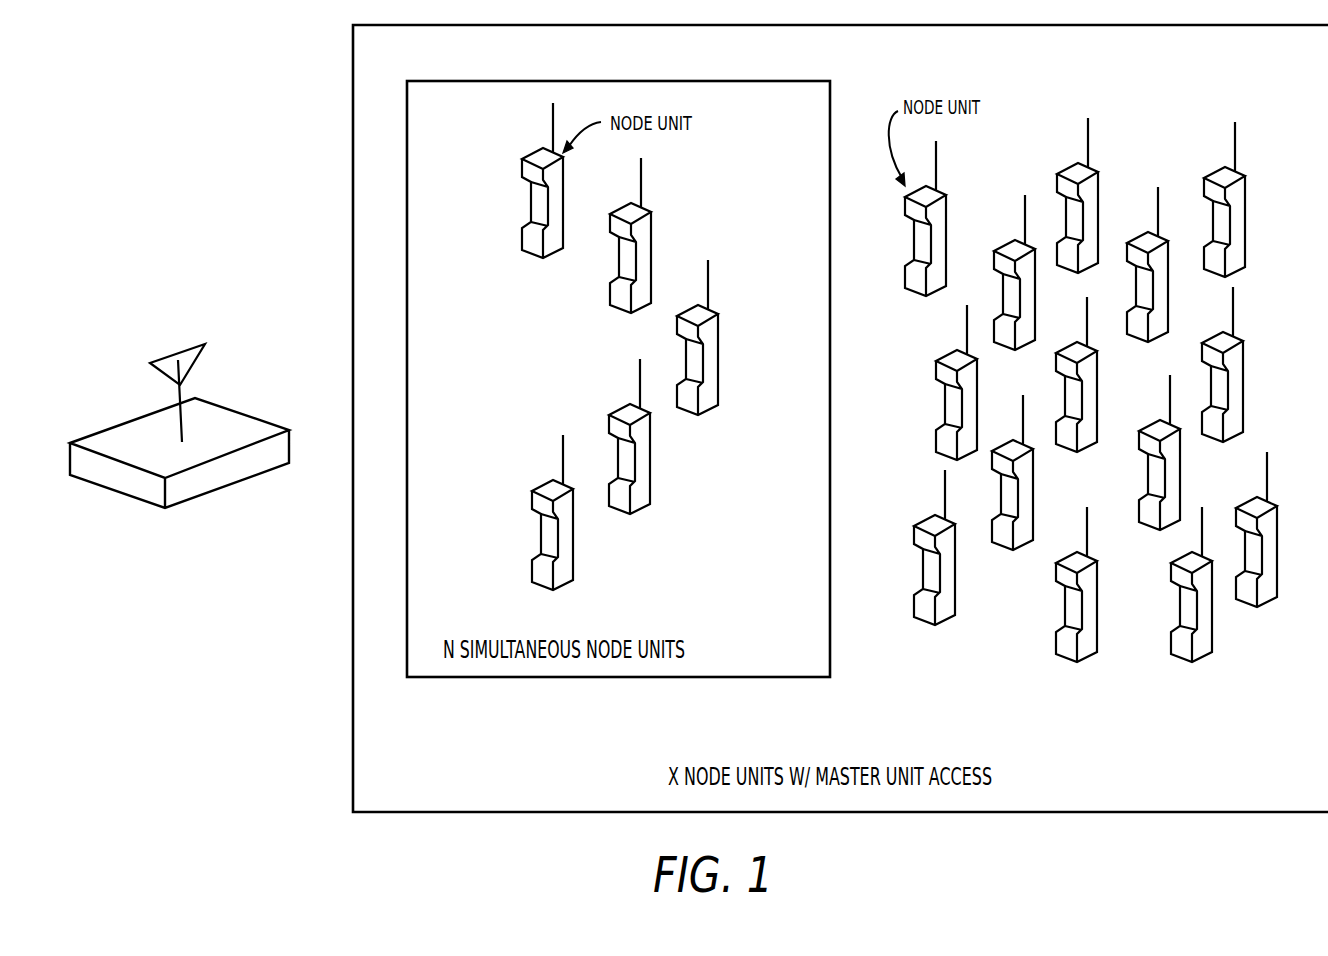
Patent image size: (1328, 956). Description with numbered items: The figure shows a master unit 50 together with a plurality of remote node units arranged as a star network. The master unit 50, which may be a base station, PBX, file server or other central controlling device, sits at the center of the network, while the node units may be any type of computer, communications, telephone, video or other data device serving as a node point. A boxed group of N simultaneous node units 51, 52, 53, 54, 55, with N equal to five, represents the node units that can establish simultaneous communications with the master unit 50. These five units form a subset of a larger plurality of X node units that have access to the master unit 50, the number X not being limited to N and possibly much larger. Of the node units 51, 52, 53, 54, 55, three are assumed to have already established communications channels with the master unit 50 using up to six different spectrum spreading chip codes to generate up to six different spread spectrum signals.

The master unit 50 is at (179, 426).
The node unit 51 is at (531, 180).
The node unit 52 is at (619, 235).
The node unit 53 is at (715, 337).
The node unit 54 is at (648, 436).
The node unit 55 is at (572, 512).